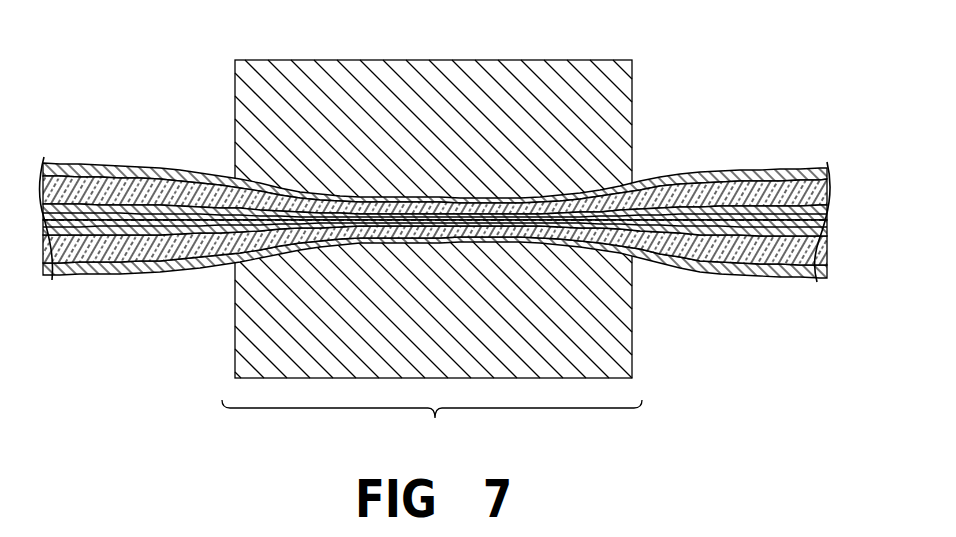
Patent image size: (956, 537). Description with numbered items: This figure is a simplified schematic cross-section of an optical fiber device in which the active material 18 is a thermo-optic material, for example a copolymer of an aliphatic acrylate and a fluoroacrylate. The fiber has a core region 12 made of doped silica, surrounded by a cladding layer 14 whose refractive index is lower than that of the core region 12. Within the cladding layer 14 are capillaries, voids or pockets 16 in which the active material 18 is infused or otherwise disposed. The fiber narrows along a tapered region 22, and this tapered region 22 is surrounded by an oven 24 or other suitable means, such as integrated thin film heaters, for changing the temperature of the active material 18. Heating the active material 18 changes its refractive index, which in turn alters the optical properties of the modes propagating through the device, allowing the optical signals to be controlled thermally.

The core region 12 is at (435, 219).
The cladding layer 14 is at (663, 215).
The pockets 16 is at (155, 190).
The active material 18 is at (117, 240).
The tapered region 22 is at (432, 425).
The oven 24 is at (447, 147).